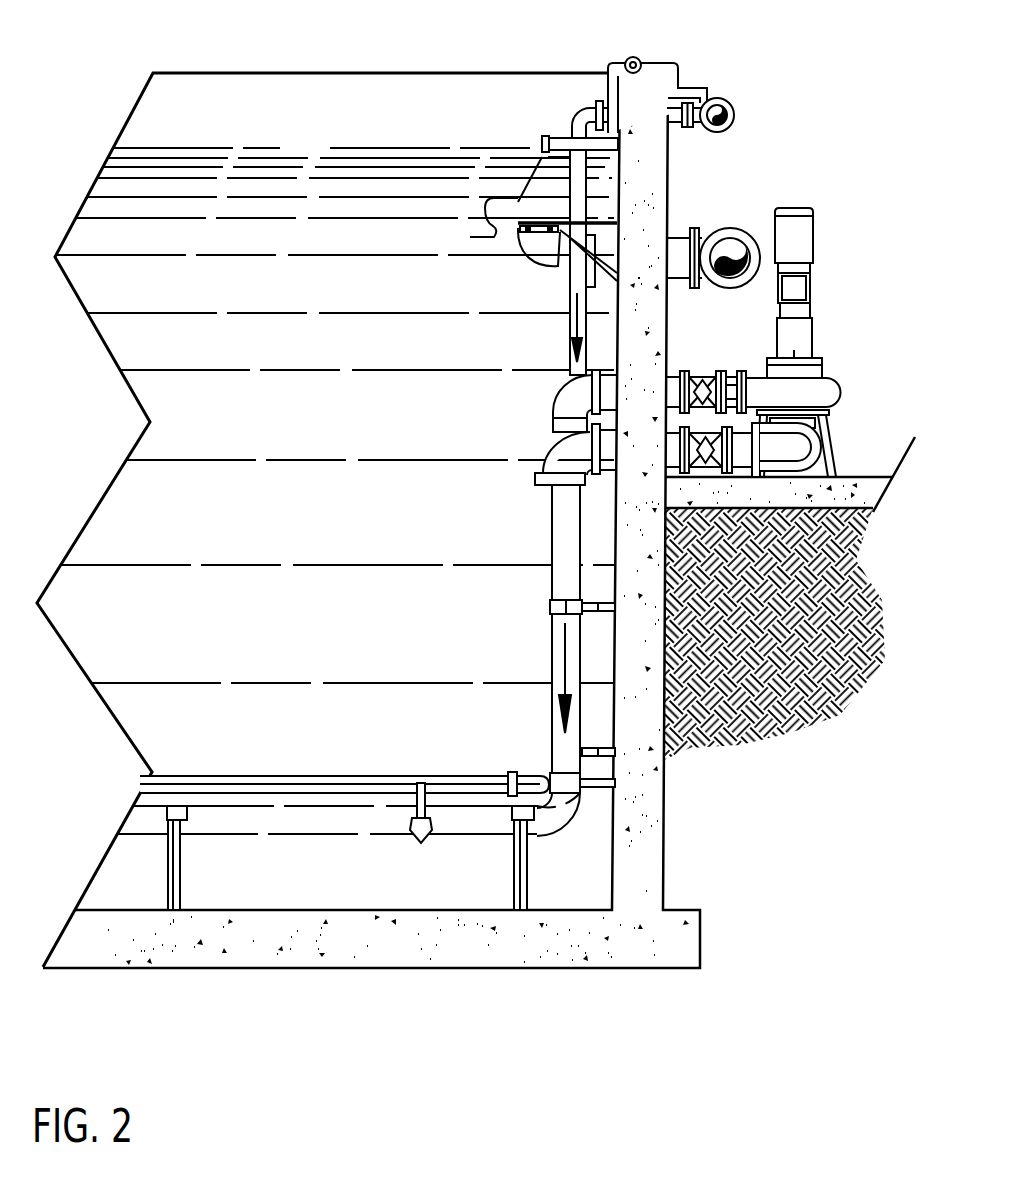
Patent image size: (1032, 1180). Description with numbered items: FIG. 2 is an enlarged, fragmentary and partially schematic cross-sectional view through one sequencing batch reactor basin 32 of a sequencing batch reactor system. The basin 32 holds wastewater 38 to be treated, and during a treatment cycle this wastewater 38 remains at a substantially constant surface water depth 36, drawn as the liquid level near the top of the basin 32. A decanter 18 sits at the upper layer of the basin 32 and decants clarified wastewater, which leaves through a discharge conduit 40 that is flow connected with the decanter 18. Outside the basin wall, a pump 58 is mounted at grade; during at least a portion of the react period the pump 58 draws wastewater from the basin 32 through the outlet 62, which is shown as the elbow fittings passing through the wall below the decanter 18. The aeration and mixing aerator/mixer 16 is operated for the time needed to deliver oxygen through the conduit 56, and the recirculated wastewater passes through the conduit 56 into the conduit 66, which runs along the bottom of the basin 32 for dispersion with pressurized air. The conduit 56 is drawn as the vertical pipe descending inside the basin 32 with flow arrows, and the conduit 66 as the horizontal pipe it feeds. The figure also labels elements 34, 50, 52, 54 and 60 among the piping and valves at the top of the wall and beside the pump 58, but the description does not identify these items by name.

The aeration and mixing aerator/mixer 16 is at (211, 818).
The decanter 18 is at (492, 230).
The sequencing batch reactor basin 32 is at (233, 129).
The overflow pipe 34 is at (637, 57).
The surface water depth 36 is at (354, 155).
The wastewater 38 is at (306, 503).
The discharge conduit 40 is at (553, 263).
The downcomer pipe 50 is at (567, 333).
The valve 52 is at (731, 104).
The upper pipe 54 is at (178, 778).
The conduit 56 is at (560, 672).
The pump 58 is at (823, 392).
The valve 60 is at (733, 230).
The outlet 62 is at (563, 413).
The conduit 66 is at (262, 822).